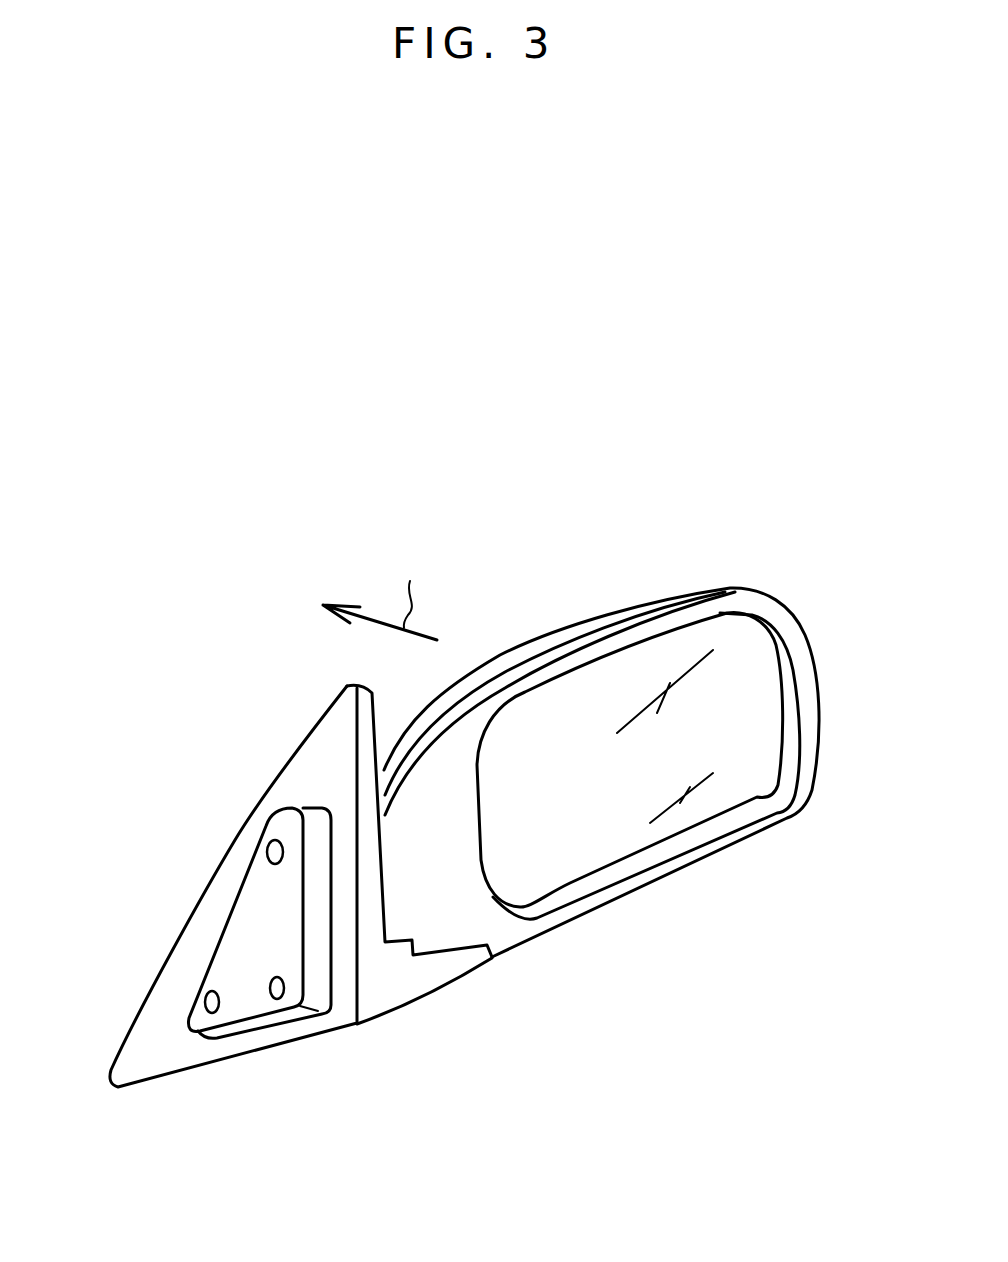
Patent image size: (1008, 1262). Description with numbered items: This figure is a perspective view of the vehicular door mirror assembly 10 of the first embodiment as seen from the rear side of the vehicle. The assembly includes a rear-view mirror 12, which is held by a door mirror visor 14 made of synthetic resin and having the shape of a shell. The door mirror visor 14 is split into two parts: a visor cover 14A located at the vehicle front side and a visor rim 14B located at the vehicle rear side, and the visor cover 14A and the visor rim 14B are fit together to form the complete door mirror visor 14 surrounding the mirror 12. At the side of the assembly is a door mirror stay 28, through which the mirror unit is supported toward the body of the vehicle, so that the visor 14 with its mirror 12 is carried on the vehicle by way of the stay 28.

The vehicular door mirror assembly 10 is at (478, 374).
The rear-view mirror 12 is at (770, 710).
The door mirror visor 14 is at (731, 591).
The visor cover 14A is at (585, 622).
The visor rim 14B is at (795, 630).
The door mirror stay 28 is at (148, 1000).